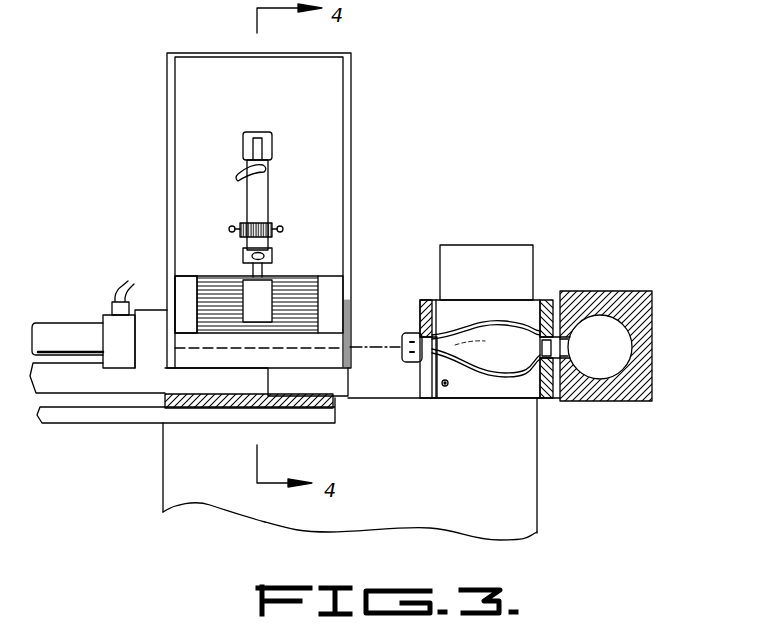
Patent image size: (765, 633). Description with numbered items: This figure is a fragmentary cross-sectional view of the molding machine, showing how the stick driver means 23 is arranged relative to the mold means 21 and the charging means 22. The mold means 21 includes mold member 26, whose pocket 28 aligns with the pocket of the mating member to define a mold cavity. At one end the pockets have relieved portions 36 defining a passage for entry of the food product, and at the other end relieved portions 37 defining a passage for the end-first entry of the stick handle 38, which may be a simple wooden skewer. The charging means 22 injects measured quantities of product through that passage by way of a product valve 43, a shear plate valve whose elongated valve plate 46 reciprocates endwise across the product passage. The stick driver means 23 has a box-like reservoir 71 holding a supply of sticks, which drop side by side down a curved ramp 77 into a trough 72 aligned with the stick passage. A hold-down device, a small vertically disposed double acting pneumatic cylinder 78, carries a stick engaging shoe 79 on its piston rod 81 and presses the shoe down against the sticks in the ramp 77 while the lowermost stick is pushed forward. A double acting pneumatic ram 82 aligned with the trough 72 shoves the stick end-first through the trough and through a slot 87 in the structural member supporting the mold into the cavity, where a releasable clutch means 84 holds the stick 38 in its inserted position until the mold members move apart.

The mold means 21 is at (430, 290).
The charging means 22 is at (622, 284).
The stick driver means 23 is at (362, 110).
The mold member 26 is at (546, 300).
The pocket 28 is at (486, 339).
The relieved portions 36 is at (533, 354).
The relieved portions 37 is at (437, 368).
The stick handle 38 is at (292, 279).
The product valve 43 is at (576, 348).
The valve plate 46 is at (558, 297).
The reservoir 71 is at (167, 133).
The trough 72 is at (222, 350).
The curved ramp 77 is at (173, 279).
The pneumatic cylinder 78 is at (268, 193).
The stick engaging shoe 79 is at (242, 278).
The piston rod 81 is at (277, 262).
The pneumatic ram 82 is at (69, 331).
The releasable clutch means 84 is at (397, 374).
The slot 87 is at (425, 380).